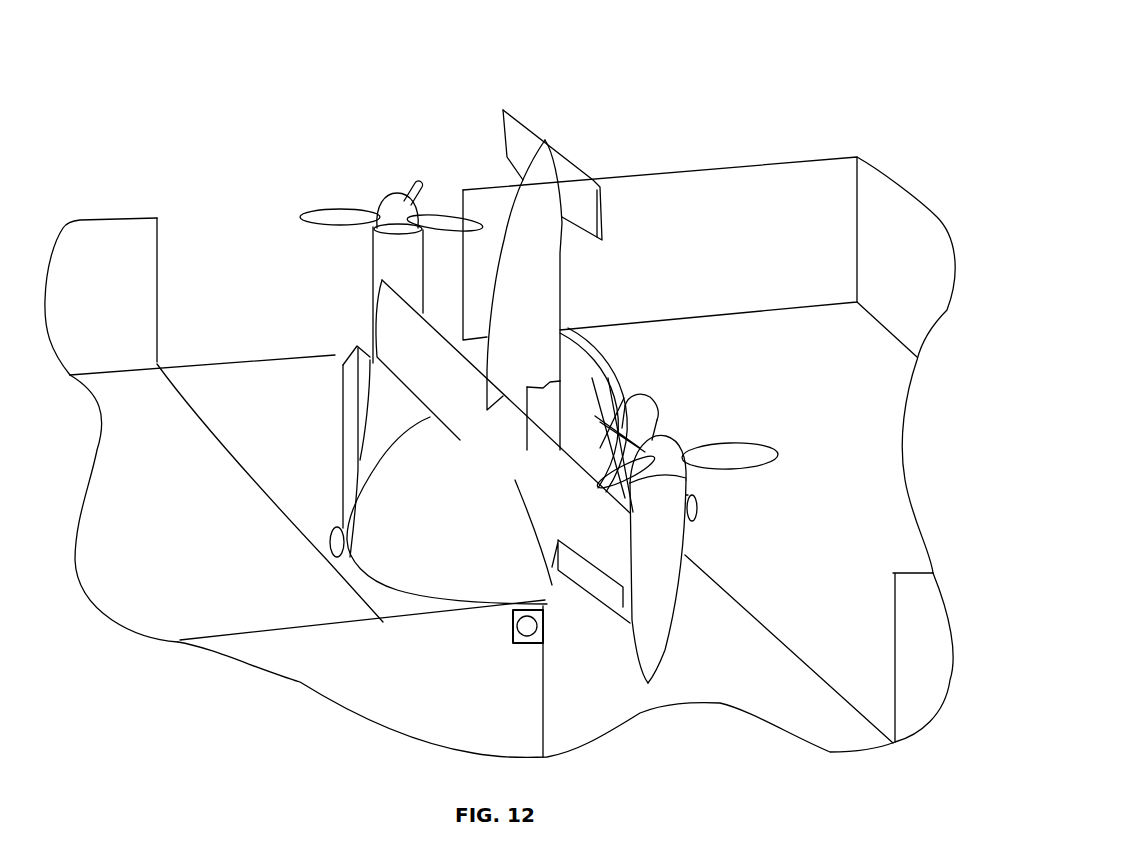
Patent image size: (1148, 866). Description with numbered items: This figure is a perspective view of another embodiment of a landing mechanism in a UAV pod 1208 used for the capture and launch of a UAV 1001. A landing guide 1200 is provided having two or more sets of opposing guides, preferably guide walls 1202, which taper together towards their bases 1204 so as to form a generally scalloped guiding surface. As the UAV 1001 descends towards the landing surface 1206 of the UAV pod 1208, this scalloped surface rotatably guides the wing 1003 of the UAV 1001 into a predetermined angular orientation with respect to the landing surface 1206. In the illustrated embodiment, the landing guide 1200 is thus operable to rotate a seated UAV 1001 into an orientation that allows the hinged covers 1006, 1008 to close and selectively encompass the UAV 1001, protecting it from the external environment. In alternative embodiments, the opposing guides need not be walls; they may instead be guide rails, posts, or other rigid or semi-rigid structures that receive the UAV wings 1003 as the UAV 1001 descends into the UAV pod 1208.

The UAV 1001 is at (530, 220).
The wing 1003 is at (603, 533).
The hinged cover 1006 is at (126, 214).
The hinged cover 1008 is at (641, 167).
The landing guide 1200 is at (346, 378).
The guide walls 1202 is at (393, 437).
The bases 1204 is at (327, 560).
The landing surface 1206 is at (767, 692).
The UAV pod 1208 is at (813, 125).